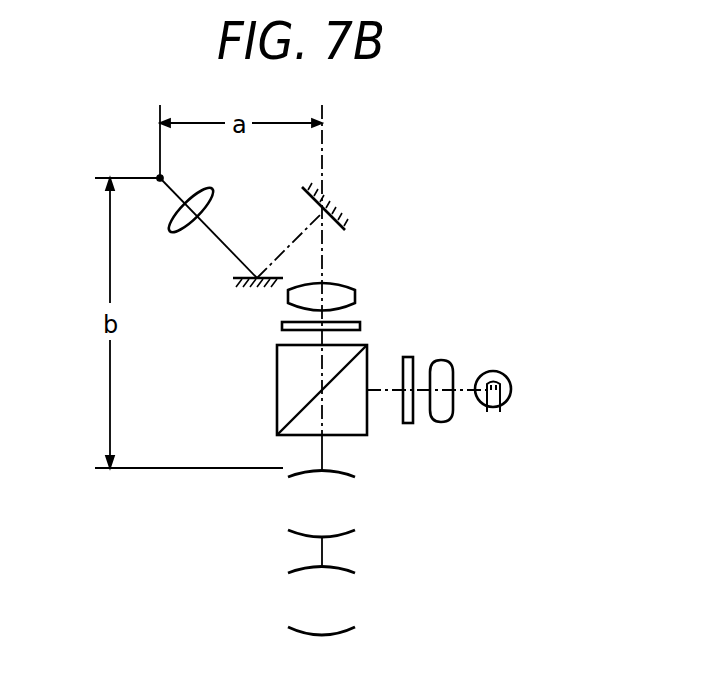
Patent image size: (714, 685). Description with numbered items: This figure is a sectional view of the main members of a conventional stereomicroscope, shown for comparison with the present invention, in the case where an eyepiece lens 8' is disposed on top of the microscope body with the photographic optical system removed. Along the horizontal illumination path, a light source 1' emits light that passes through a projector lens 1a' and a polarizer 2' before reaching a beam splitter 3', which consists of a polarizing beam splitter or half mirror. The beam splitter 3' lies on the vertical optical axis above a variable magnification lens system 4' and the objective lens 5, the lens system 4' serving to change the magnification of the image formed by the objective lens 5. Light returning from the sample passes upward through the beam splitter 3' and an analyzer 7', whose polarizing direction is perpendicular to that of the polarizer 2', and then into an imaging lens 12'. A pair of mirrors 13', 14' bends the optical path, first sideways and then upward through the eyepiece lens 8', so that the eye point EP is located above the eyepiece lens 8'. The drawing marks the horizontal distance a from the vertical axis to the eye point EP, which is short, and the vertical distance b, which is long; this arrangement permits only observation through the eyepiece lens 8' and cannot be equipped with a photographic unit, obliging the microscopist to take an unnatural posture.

The eye point EP is at (158, 177).
The light source 1' is at (501, 428).
The projector lens 1a' is at (458, 427).
The polarizer 2' is at (418, 421).
The beam splitter 3' is at (357, 374).
The variable magnification lens system 4' is at (359, 522).
The objective lens 5 is at (356, 612).
The analyzer 7' is at (350, 308).
The eyepiece lens 8' is at (187, 246).
The imaging lens 12' is at (361, 281).
The mirror 13' is at (364, 214).
The mirror 14' is at (235, 305).